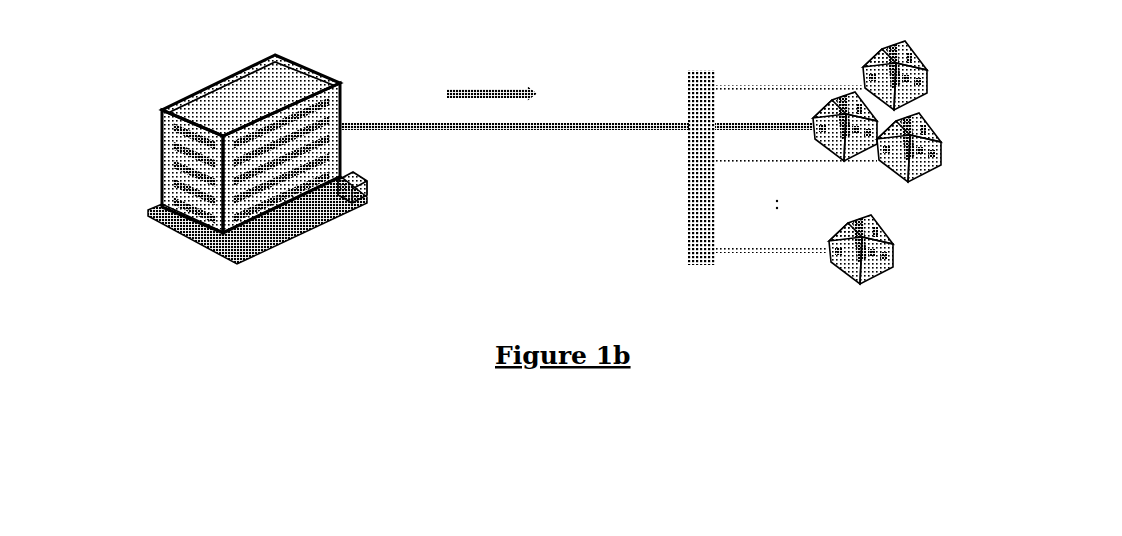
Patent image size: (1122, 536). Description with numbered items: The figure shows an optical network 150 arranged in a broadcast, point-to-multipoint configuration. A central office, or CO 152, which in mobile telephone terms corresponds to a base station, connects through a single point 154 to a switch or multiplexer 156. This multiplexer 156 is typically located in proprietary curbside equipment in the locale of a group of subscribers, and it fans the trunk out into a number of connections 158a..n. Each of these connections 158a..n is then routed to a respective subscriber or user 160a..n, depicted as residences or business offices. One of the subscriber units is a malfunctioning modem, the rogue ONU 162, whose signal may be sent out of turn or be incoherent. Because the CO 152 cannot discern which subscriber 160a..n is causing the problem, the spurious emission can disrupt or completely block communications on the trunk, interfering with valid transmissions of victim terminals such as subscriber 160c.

The optical network 150 is at (581, 26).
The CO (central office) 152 is at (623, 106).
The single point 154 is at (188, 85).
The switch or multiplexer (MUX) 156 is at (690, 70).
The connections 158a..n is at (700, 104).
The subscribers or users 160a..n is at (895, 113).
The subscriber c (victim) 160c is at (864, 186).
The rogue ONU (malfunctioning subscriber unit or modem) 162 is at (825, 113).